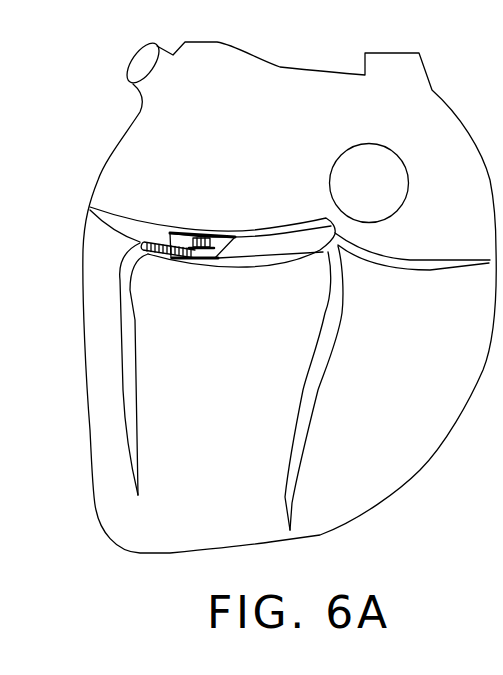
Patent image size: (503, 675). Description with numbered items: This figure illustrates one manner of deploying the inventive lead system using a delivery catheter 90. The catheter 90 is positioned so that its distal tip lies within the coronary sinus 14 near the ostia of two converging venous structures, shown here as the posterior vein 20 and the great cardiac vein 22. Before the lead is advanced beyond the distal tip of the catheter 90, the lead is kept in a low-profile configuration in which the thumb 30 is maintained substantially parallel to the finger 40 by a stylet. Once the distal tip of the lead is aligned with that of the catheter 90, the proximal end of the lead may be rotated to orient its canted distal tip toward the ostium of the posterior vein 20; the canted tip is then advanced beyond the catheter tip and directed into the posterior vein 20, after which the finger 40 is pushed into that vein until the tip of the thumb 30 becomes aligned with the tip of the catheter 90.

The coronary sinus 14 is at (253, 227).
The great cardiac vein 22 is at (90, 207).
The posterior vein 20 is at (123, 282).
The thumb 30 is at (208, 240).
The finger 40 is at (193, 253).
The delivery catheter 90 is at (248, 247).